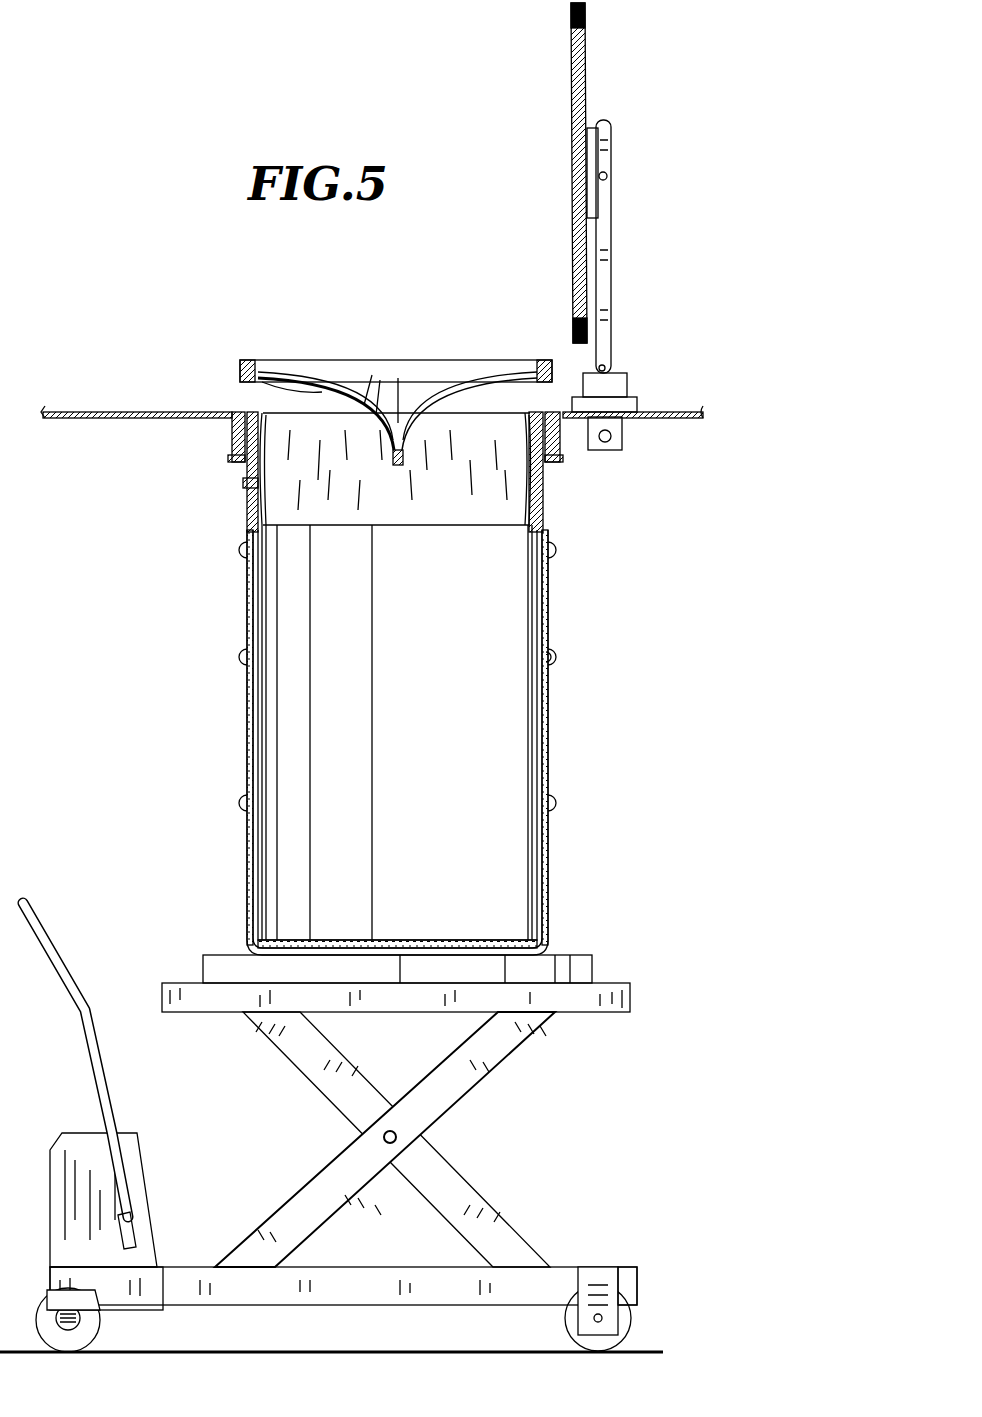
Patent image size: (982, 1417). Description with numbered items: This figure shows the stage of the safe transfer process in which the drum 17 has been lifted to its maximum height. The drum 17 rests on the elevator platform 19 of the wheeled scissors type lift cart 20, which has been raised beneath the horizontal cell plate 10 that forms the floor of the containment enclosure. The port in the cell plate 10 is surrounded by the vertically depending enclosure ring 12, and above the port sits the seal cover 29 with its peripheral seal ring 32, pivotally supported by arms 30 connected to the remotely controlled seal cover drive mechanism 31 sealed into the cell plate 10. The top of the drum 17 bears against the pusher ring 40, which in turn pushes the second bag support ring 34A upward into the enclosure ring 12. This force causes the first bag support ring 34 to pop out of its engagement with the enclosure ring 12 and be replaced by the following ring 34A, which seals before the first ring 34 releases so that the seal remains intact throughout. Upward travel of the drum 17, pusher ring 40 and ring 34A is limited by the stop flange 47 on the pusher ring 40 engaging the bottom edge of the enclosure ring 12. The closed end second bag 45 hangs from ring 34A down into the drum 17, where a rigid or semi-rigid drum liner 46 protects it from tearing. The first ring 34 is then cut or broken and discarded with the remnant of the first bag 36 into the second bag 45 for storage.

The cell plate 10 is at (88, 412).
The enclosure ring 12 is at (232, 438).
The drum 17 is at (547, 613).
The elevator platform 19 is at (630, 1000).
The lift cart 20 is at (637, 1285).
The seal cover 29 is at (587, 62).
The arms 30 is at (612, 279).
The seal cover drive mechanism 31 is at (622, 440).
The seal ring 32 is at (572, 12).
The first bag support ring 34 is at (275, 382).
The second bag support ring 34A is at (267, 428).
The first bag 36 is at (378, 390).
The pusher ring 40 is at (247, 483).
The second bag 45 is at (529, 455).
The drum liner 46 is at (528, 648).
The stop flange 47 is at (555, 470).